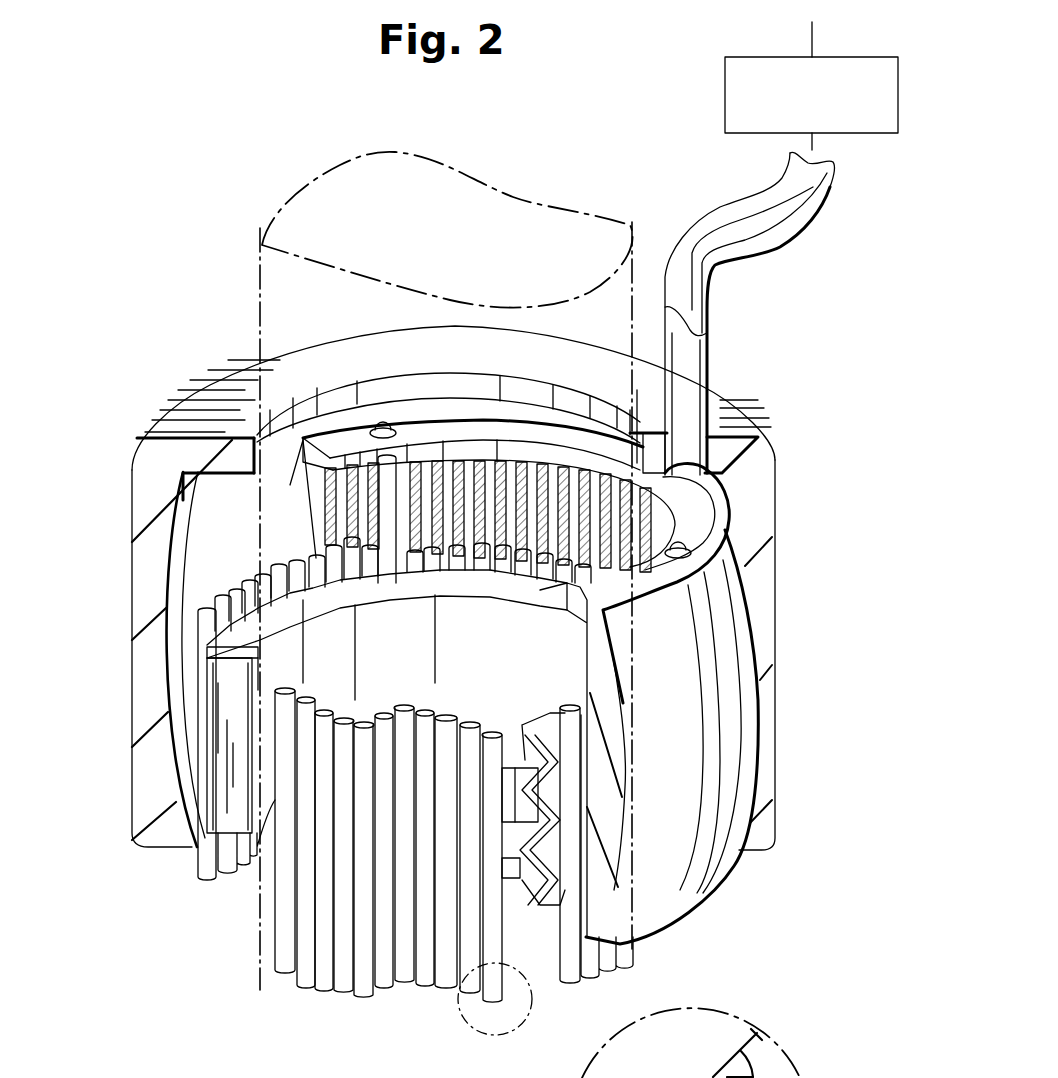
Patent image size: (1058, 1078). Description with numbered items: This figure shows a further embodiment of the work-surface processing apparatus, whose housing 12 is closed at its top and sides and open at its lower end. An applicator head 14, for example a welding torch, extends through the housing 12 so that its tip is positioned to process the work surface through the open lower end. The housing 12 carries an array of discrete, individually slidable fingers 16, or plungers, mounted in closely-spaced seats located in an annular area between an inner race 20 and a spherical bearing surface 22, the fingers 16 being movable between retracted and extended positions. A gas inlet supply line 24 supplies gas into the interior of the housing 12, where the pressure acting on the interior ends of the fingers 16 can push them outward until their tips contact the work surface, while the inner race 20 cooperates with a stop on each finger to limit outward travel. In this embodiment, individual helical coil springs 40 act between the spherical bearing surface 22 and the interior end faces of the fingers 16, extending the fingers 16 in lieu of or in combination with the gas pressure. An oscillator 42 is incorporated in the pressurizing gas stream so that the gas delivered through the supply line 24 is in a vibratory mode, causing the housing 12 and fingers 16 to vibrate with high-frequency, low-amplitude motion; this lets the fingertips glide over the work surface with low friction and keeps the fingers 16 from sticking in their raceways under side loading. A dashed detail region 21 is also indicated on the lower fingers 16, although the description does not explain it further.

The housing 12 is at (177, 410).
The applicator head 14 is at (262, 232).
The fingers 16 is at (285, 950).
The inner race 20 is at (232, 722).
The detail region 21 is at (467, 1030).
The spherical bearing surface 22 is at (675, 833).
The gas inlet supply line 24 is at (700, 265).
The springs 40 is at (325, 508).
The oscillator 42 is at (725, 125).